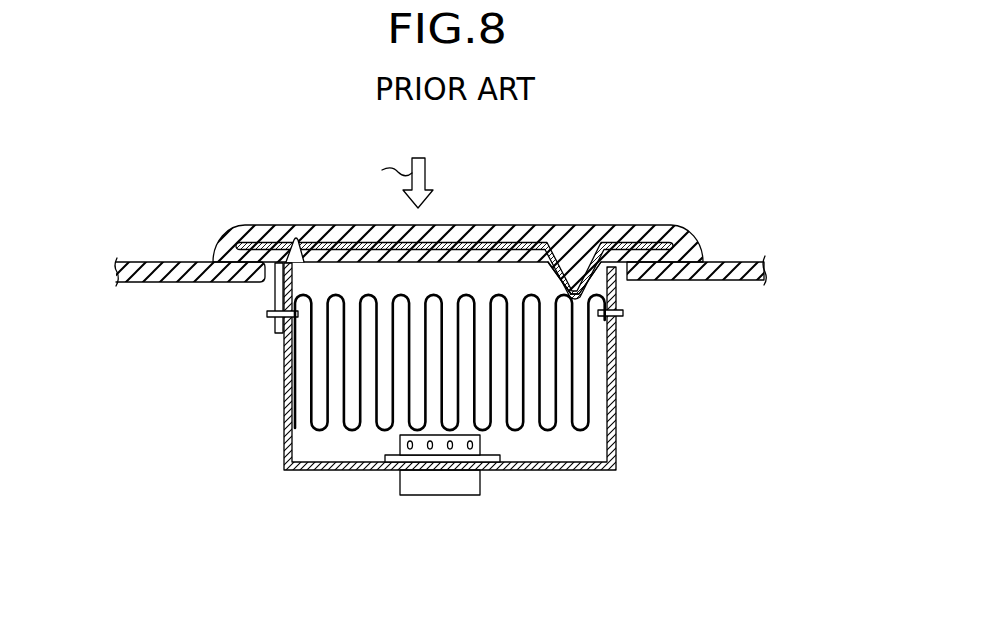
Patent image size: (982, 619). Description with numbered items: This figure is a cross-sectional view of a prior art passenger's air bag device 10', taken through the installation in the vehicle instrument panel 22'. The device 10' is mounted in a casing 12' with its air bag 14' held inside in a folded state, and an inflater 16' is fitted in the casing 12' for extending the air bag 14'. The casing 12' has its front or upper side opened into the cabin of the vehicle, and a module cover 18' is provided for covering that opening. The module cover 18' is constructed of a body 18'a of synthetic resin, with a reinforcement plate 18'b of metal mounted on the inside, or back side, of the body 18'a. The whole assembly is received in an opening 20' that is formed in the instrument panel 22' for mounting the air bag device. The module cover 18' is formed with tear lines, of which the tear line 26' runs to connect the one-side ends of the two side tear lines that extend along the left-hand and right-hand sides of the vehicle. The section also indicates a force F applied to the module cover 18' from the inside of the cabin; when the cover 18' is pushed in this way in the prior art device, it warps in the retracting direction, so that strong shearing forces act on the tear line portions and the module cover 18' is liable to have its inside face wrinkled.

The passenger's air bag device 10' is at (440, 332).
The casing 12' is at (483, 366).
The air bag 14' is at (451, 412).
The inflater 16' is at (446, 494).
The module cover 18' is at (458, 205).
The body 18'a is at (573, 225).
The reinforcement plate 18'b is at (454, 227).
The opening 20' is at (413, 308).
The instrument panel 22' is at (440, 221).
The tear line 26' is at (280, 209).